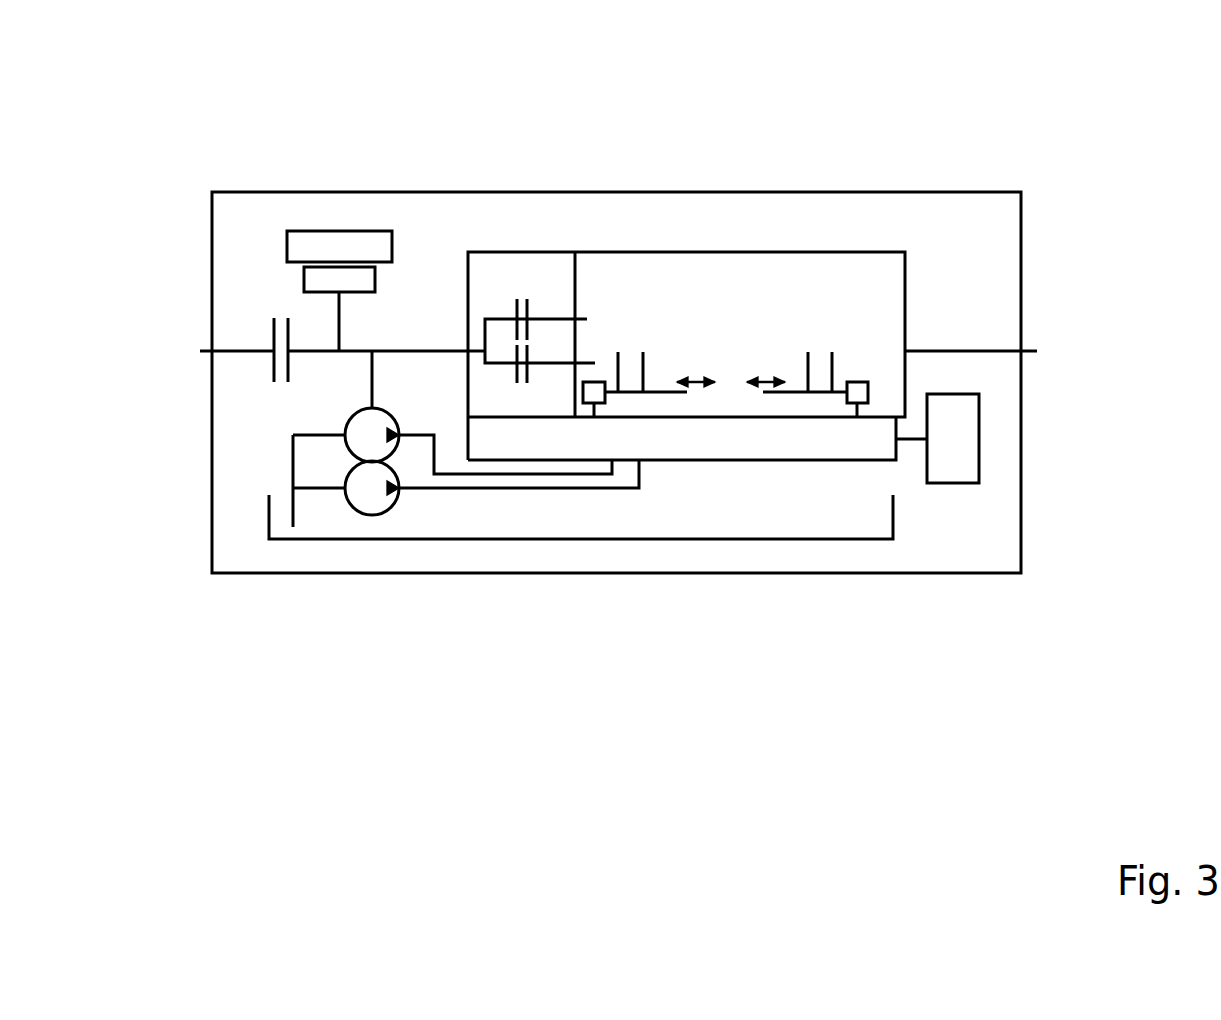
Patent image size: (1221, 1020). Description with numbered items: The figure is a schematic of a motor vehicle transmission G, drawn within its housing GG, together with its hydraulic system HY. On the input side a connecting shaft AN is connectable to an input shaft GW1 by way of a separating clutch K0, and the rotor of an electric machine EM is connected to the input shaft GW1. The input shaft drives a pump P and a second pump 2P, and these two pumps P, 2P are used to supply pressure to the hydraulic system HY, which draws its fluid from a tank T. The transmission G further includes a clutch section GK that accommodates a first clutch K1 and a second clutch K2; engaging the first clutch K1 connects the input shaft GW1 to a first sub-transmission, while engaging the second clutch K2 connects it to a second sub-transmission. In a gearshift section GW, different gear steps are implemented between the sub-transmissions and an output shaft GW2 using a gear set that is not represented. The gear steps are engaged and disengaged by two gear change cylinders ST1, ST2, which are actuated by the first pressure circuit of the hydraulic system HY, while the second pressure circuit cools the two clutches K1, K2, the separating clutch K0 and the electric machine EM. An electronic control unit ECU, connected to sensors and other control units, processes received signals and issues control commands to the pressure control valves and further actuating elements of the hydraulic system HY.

The motor vehicle transmission G is at (973, 141).
The connecting shaft AN is at (237, 351).
The separating clutch K0 is at (277, 305).
The electric machine EM is at (332, 223).
The housing GG is at (400, 192).
The clutch section GK is at (518, 252).
The first clutch K1 is at (517, 293).
The second clutch K2 is at (532, 340).
The gearshift section GW is at (688, 252).
The input shaft GW1 is at (316, 352).
The output shaft GW2 is at (1028, 351).
The pump P is at (340, 452).
The second pump 2P is at (393, 513).
The gear change cylinder ST1 is at (662, 393).
The gear change cylinder ST2 is at (793, 393).
The hydraulic system HY is at (717, 461).
The tank T is at (765, 539).
The electronic control unit ECU is at (979, 450).